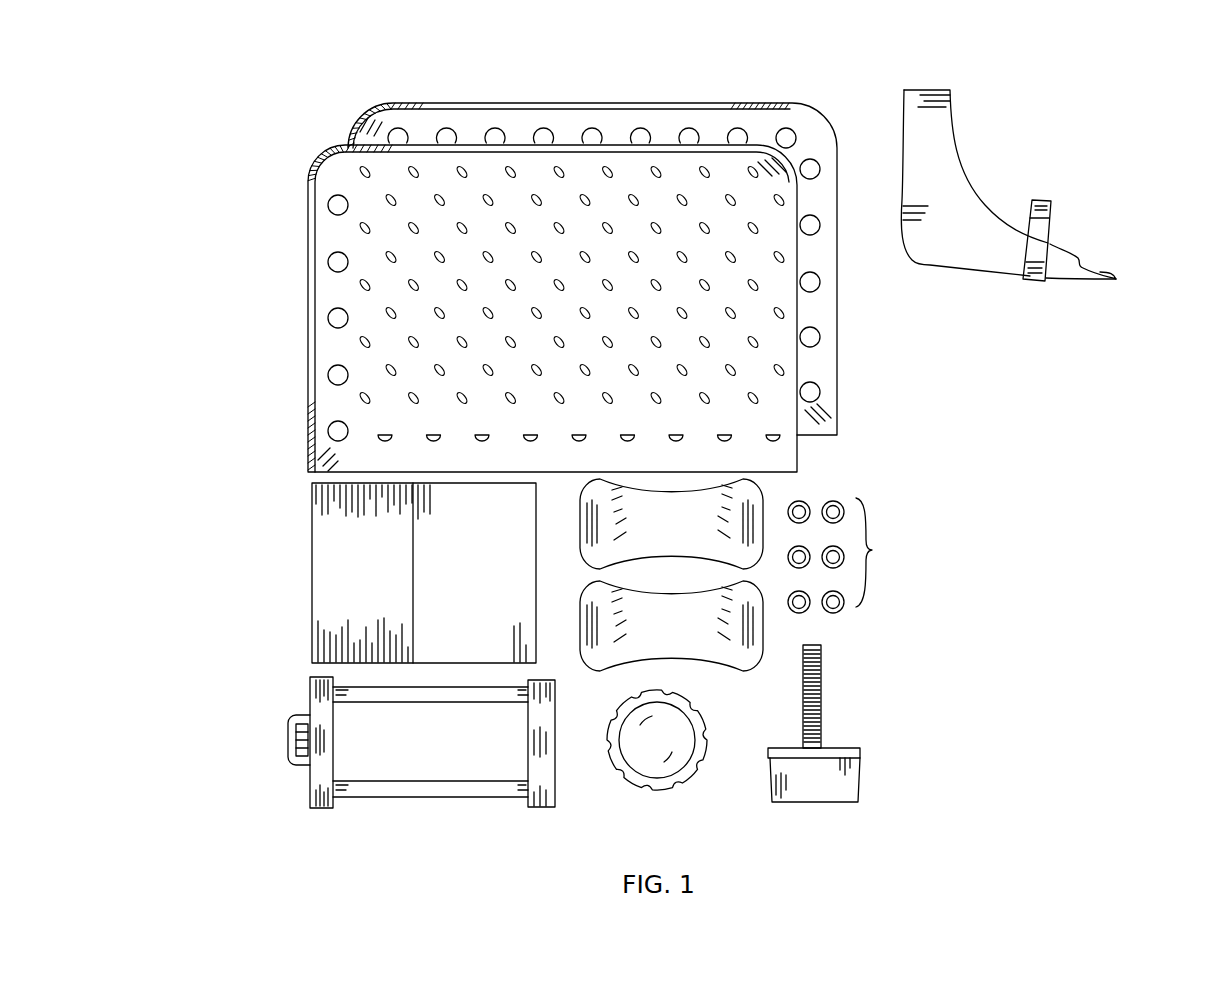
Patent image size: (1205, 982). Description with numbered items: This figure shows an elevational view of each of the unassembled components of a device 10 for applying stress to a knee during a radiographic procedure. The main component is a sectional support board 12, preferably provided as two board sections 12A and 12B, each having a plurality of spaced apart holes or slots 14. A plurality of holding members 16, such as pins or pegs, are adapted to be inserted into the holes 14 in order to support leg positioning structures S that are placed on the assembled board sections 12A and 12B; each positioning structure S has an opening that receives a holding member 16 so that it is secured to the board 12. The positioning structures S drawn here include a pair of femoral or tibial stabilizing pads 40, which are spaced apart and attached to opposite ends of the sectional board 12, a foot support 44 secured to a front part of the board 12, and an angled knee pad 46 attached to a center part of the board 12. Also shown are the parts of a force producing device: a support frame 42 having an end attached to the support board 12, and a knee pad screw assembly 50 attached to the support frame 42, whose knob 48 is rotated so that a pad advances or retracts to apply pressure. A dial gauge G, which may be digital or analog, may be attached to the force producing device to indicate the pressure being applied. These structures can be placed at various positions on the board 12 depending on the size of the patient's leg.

The device 10 is at (78, 116).
The sectional support board 12 is at (313, 158).
The board section 12A is at (456, 102).
The board section 12B is at (735, 160).
The holes or slots 14 is at (338, 205).
The holding members 16 is at (872, 550).
The stabilizing pad 40 is at (762, 580).
The support frame 42 is at (310, 692).
The foot support 44 is at (915, 265).
The angled knee pad 46 is at (312, 492).
The knob 48 is at (617, 776).
The knee pad screw assembly 50 is at (860, 748).
The positioning structures S is at (950, 92).
The dial gauge G is at (288, 740).